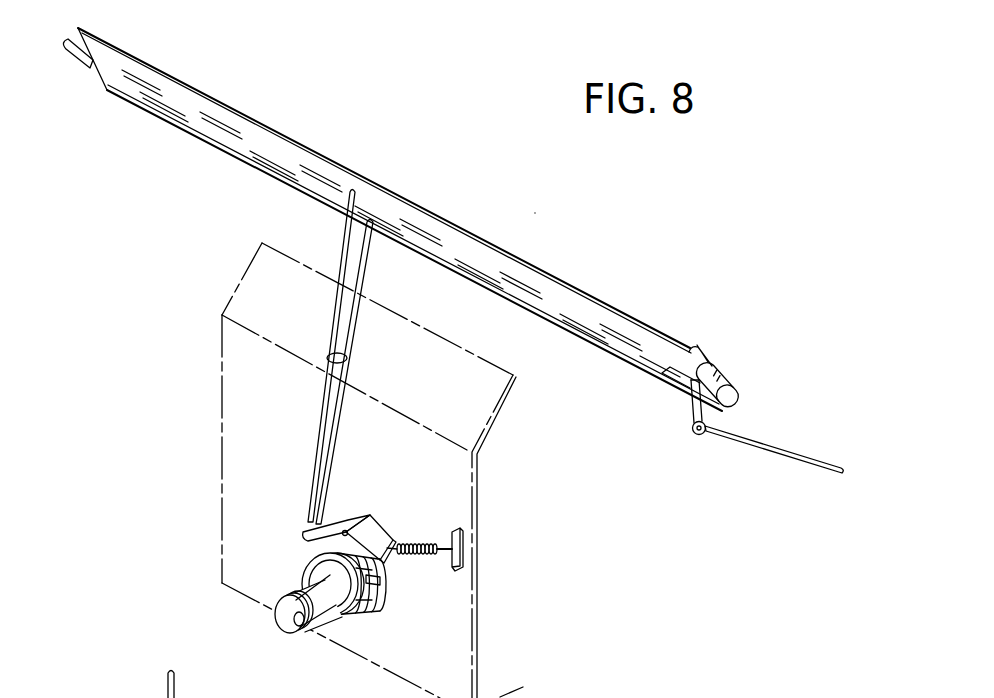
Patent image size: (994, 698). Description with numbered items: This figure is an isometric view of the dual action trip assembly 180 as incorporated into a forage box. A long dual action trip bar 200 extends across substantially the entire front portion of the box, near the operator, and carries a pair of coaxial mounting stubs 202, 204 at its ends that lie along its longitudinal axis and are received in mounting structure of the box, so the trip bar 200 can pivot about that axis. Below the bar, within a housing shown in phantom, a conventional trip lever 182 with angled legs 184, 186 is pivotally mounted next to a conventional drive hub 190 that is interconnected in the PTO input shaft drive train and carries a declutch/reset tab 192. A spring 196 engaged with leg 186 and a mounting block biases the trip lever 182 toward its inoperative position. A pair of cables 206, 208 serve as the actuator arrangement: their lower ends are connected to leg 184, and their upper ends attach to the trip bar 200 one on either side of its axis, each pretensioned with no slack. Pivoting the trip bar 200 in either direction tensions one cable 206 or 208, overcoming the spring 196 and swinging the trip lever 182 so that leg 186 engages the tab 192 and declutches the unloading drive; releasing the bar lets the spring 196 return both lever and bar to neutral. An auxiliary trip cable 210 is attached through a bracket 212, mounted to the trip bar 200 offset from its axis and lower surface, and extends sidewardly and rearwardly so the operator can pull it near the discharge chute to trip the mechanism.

The dual action trip assembly 180 is at (537, 210).
The trip lever 182 is at (394, 489).
The leg 184 is at (303, 538).
The leg 186 is at (390, 530).
The drive hub 190 is at (380, 636).
The declutch/reset tab 192 is at (385, 582).
The spring 196 is at (440, 547).
The dual action trip bar 200 is at (645, 315).
The mounting stub 202 is at (80, 70).
The mounting stub 204 is at (730, 383).
The cable 206 is at (320, 410).
The cable 208 is at (338, 420).
The auxiliary trip cable 210 is at (790, 450).
The bracket 212 is at (682, 407).